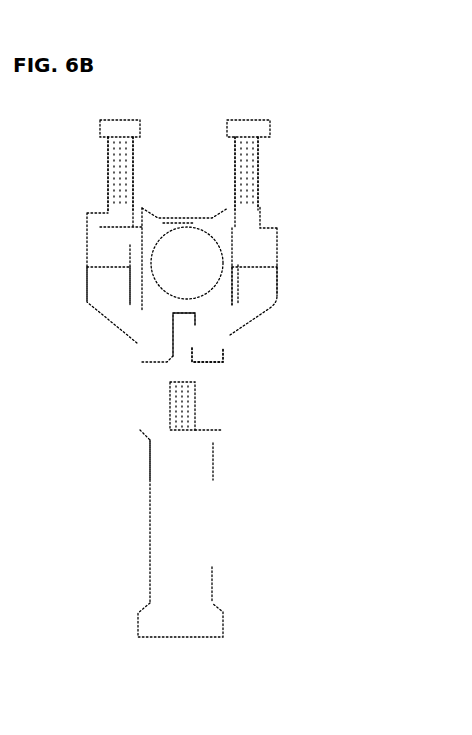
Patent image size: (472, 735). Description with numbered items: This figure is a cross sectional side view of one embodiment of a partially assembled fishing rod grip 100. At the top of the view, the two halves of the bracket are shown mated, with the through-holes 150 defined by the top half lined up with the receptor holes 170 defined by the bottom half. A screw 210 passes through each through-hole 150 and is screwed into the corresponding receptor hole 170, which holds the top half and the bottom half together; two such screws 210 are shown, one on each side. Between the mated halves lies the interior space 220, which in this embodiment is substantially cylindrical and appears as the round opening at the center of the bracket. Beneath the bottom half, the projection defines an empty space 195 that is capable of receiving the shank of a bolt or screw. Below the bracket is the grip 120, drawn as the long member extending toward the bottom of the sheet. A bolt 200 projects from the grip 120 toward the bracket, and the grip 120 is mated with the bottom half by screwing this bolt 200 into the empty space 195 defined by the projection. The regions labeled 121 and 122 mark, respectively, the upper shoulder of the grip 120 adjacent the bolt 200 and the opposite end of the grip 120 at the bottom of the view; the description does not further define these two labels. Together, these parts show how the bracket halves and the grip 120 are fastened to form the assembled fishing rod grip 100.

The fishing rod grip 100 is at (259, 88).
The screw 210 is at (225, 126).
The through-hole 150 is at (112, 244).
The receptor hole 170 is at (110, 285).
The interior space 220 is at (187, 263).
The empty space 195 is at (191, 341).
The bolt 200 is at (190, 404).
The shaft shoulder 121 is at (124, 429).
The grip 120 is at (151, 527).
The shaft end 122 is at (208, 652).